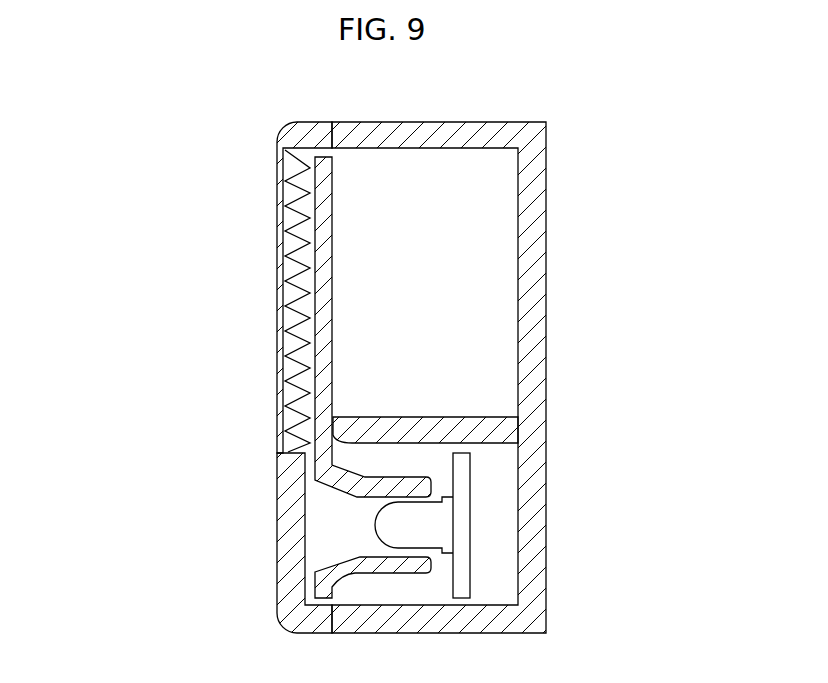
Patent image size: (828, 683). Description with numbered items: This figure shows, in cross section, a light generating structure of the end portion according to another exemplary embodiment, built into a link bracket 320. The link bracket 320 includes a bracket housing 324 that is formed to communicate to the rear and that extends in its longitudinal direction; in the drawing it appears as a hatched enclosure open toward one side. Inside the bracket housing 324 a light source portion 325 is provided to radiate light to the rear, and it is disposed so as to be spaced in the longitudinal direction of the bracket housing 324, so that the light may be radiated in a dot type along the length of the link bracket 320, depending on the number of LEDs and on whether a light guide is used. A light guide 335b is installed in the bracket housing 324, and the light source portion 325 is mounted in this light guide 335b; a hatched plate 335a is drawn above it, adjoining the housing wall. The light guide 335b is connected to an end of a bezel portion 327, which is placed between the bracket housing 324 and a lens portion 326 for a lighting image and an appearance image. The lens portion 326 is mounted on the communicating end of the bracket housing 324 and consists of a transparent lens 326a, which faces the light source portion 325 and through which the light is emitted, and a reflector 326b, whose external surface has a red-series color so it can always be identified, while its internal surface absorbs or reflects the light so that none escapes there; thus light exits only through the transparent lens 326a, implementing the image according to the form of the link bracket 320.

The link bracket 320 is at (374, 373).
The bracket housing 324 is at (546, 262).
The light source portion 325 is at (430, 525).
The lens portion 326 is at (240, 377).
The transparent lens 326a is at (282, 543).
The reflector 326b is at (232, 287).
The bezel portion 327 is at (295, 216).
The first support plate 335a is at (428, 417).
The light guide 335b is at (413, 460).